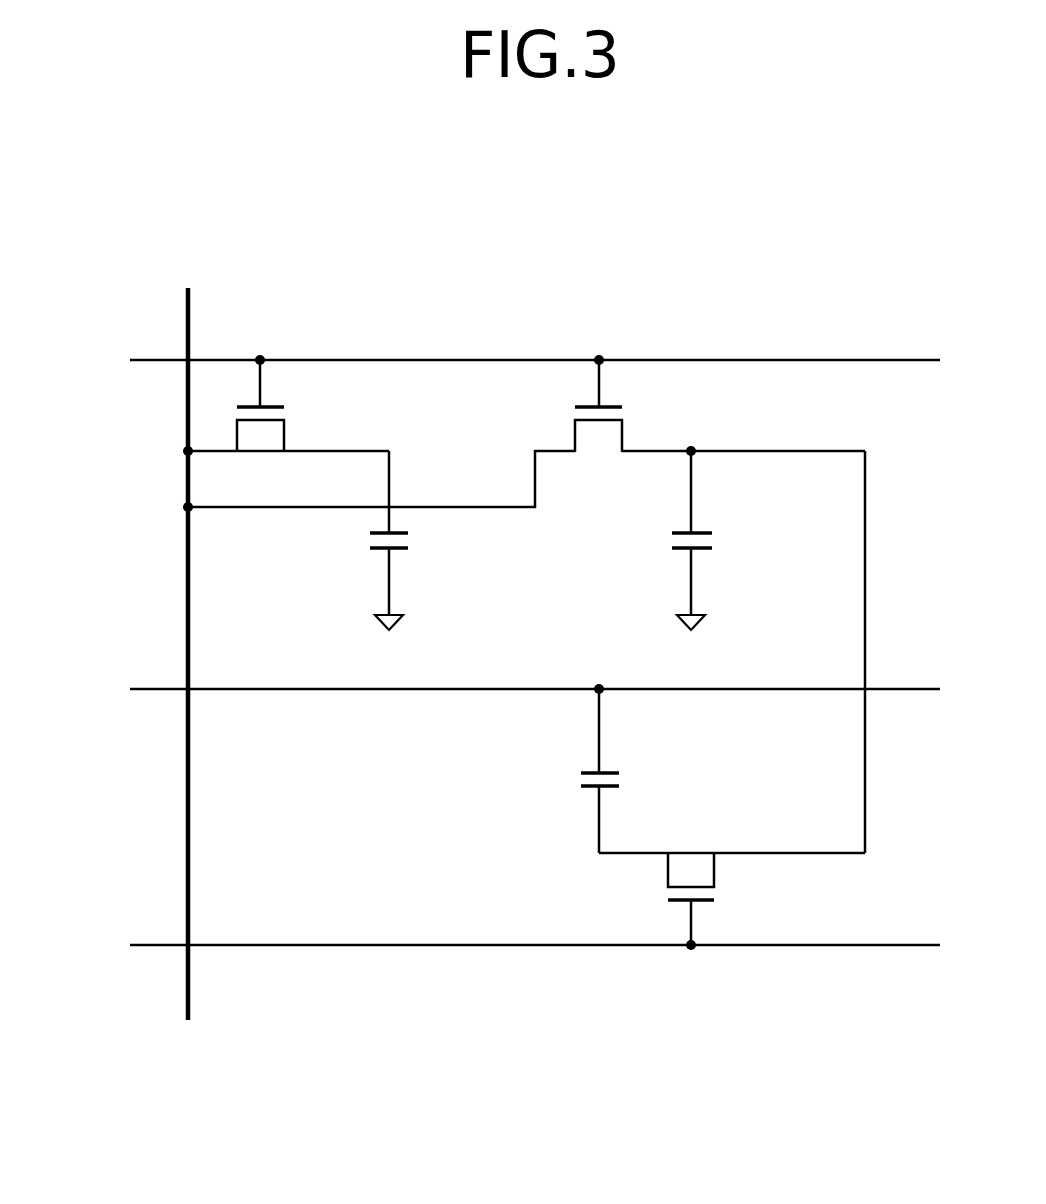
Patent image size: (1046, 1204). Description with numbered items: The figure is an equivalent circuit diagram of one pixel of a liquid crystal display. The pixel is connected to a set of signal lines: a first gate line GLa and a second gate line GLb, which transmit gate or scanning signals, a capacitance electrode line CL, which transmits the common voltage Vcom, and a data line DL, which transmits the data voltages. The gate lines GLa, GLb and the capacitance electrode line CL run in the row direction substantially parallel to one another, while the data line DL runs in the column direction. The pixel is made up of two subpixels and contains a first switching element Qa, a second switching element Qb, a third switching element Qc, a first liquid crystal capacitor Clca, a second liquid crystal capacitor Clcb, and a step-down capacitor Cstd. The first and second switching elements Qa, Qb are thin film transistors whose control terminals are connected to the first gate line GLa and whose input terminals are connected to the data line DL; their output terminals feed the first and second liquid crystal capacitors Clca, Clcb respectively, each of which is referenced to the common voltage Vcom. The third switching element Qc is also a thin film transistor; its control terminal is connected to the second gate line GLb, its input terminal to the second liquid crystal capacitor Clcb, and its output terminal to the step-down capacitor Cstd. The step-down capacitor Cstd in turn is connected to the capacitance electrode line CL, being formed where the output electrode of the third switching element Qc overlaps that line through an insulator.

The data line DL is at (188, 310).
The first gate line GLa is at (153, 362).
The second gate line GLb is at (153, 947).
The capacitance electrode line CL is at (153, 691).
The first switching element Qa is at (259, 424).
The second switching element Qb is at (597, 423).
The third switching element Qc is at (692, 887).
The first liquid crystal capacitor Clca is at (387, 549).
The second liquid crystal capacitor Clcb is at (682, 549).
The step-down capacitor Cstd is at (657, 805).
The common voltage Vcom is at (538, 641).